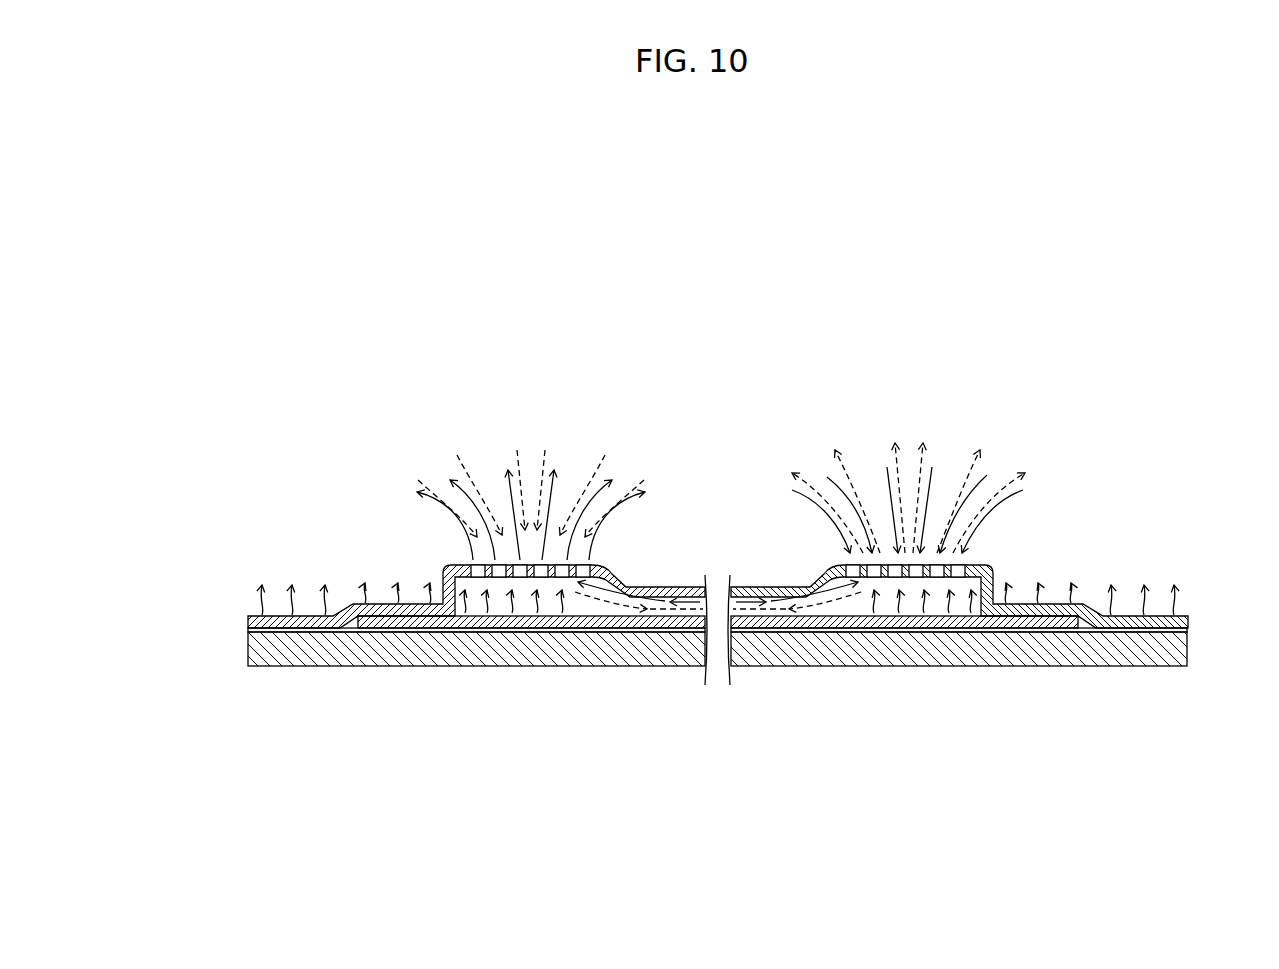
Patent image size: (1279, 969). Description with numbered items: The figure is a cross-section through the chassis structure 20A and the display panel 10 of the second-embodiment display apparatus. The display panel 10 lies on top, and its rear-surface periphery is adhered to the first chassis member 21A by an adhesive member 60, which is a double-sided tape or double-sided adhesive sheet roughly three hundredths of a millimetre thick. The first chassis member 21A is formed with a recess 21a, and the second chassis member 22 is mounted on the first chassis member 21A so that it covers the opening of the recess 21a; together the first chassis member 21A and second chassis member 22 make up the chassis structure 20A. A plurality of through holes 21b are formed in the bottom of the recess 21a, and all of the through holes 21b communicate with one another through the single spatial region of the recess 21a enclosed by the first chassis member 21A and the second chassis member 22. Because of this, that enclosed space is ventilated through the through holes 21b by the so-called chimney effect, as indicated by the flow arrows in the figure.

The display panel 10 is at (248, 650).
The adhesive member 60 is at (267, 629).
The chassis structure 20A is at (323, 553).
The first chassis member 21A is at (709, 574).
The recess 21a is at (618, 586).
The through holes 21b is at (589, 565).
The second chassis member 22 is at (366, 615).